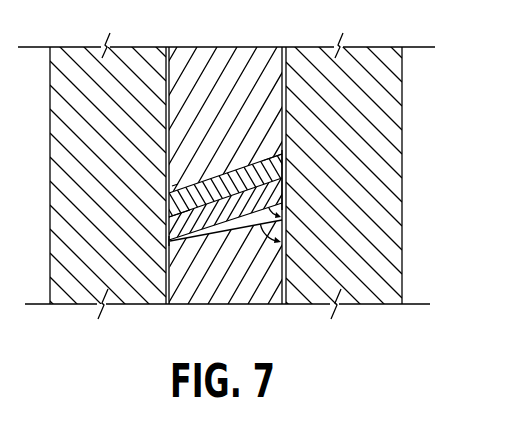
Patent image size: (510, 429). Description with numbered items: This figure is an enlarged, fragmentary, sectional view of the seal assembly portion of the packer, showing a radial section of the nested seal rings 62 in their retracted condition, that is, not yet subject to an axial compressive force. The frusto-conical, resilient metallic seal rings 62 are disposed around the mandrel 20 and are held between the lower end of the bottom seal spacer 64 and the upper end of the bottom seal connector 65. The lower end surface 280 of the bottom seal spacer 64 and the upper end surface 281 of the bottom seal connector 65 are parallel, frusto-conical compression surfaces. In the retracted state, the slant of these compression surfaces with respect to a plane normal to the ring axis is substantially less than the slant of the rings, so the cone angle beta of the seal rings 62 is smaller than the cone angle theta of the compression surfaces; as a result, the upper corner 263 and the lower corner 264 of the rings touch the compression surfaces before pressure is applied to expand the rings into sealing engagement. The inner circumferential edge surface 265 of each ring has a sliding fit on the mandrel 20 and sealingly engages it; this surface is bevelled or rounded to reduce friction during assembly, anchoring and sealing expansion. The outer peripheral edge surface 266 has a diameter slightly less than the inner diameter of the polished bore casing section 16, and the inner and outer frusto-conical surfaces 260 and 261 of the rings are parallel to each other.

The polished bore casing section 16 is at (63, 104).
The mandrel 20 is at (395, 113).
The bottom seal spacer 64 is at (227, 48).
The bottom seal connector 65 is at (190, 288).
The seal ring 62 is at (175, 180).
The outer frusto-conical surface 261 is at (232, 171).
The inner frusto-conical surface 260 is at (222, 222).
The upper corner 263 is at (280, 152).
The lower corner 264 is at (173, 247).
The inner circumferential edge surface 265 is at (283, 168).
The outer peripheral edge surface 266 is at (168, 223).
The lower end surface 280 is at (198, 172).
The upper end surface 281 is at (243, 228).